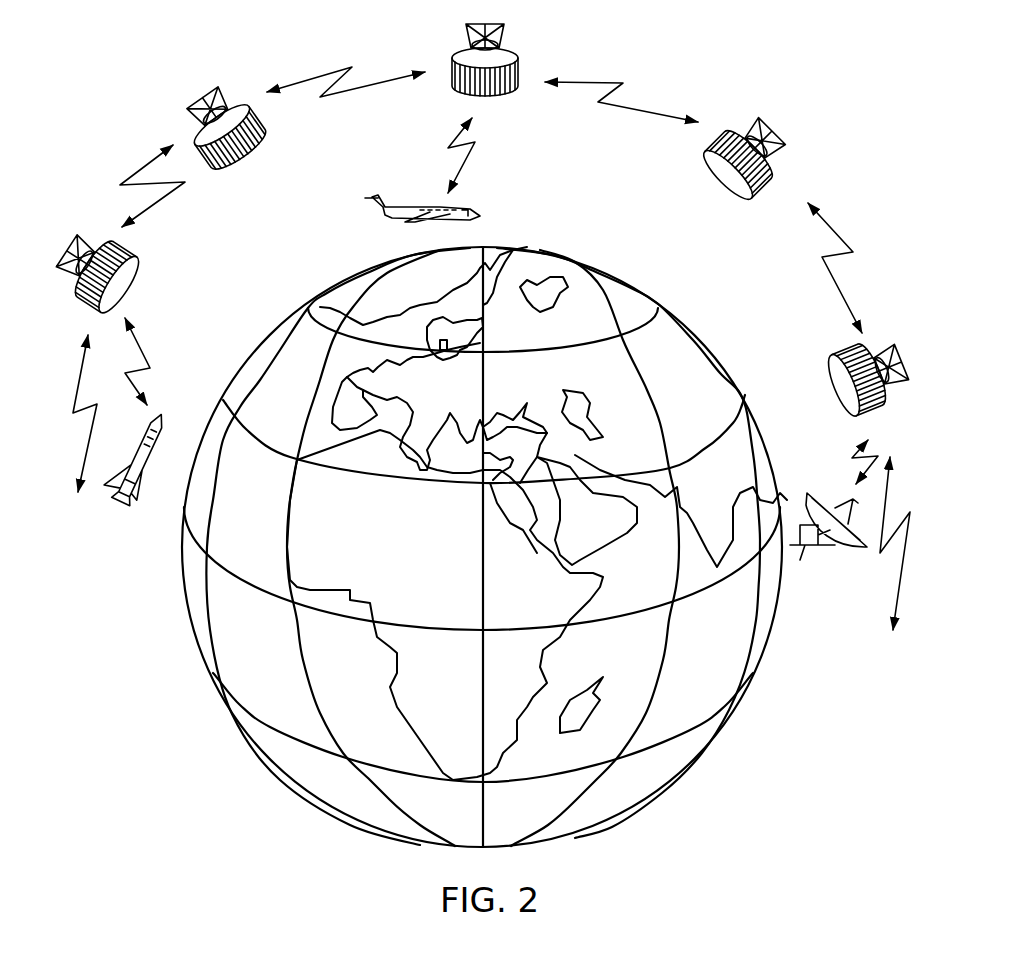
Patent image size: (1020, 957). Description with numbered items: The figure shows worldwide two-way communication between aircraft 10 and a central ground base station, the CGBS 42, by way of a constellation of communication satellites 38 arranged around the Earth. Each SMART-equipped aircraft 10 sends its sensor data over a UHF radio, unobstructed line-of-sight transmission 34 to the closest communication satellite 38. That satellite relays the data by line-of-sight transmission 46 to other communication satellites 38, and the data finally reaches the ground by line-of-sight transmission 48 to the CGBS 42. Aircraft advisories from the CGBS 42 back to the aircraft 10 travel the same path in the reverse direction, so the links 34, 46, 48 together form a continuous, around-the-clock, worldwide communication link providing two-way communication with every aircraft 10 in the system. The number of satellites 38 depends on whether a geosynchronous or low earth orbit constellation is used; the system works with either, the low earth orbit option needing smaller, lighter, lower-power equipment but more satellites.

The aircraft 10 is at (153, 472).
The transmission 34 is at (160, 317).
The communication satellite 38 is at (231, 84).
The CGBS 42 is at (810, 546).
The line of sight transmission 46 is at (130, 158).
The line of sight transmission 48 is at (842, 466).